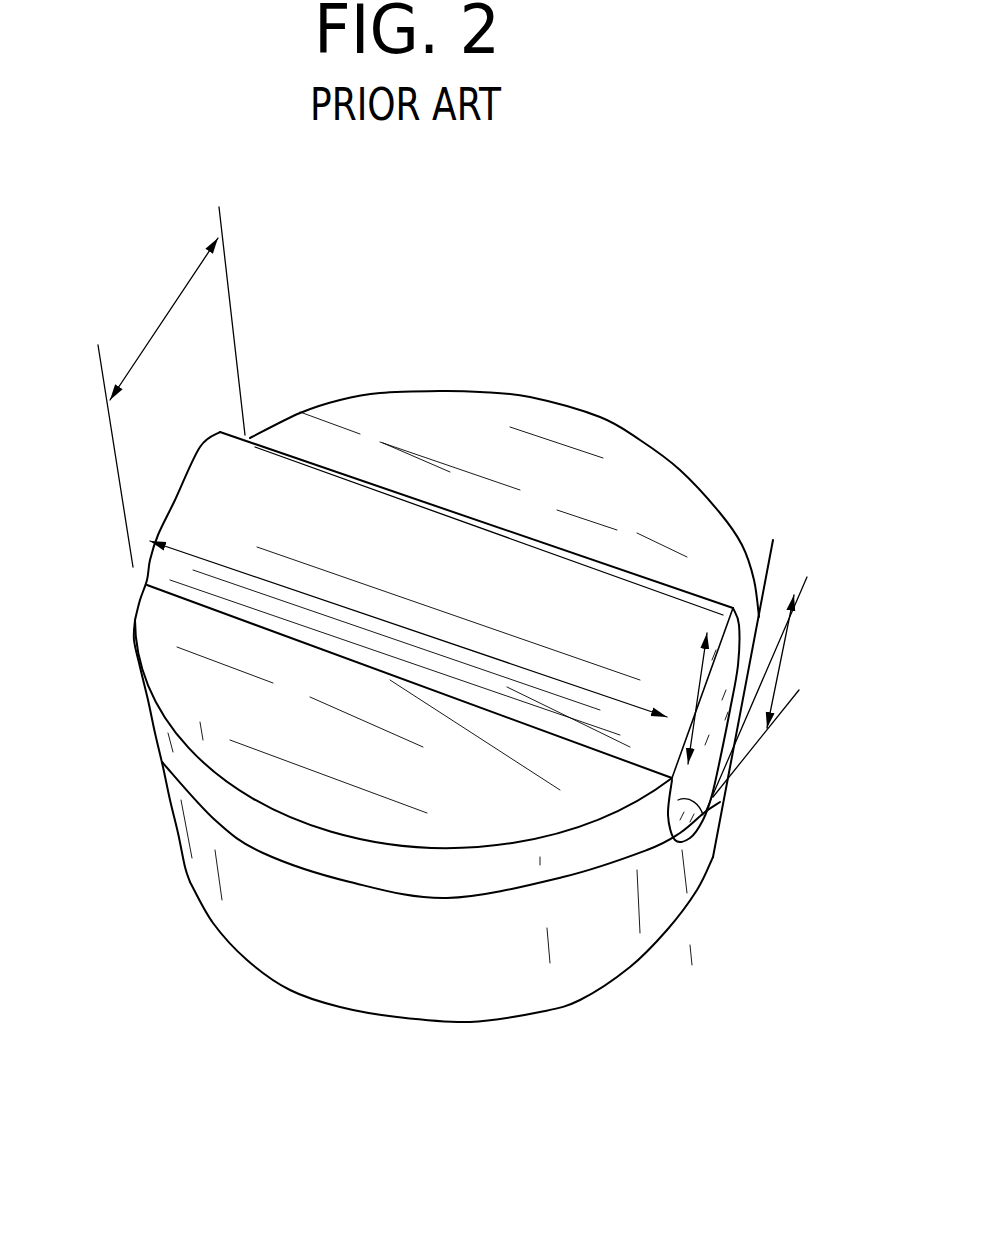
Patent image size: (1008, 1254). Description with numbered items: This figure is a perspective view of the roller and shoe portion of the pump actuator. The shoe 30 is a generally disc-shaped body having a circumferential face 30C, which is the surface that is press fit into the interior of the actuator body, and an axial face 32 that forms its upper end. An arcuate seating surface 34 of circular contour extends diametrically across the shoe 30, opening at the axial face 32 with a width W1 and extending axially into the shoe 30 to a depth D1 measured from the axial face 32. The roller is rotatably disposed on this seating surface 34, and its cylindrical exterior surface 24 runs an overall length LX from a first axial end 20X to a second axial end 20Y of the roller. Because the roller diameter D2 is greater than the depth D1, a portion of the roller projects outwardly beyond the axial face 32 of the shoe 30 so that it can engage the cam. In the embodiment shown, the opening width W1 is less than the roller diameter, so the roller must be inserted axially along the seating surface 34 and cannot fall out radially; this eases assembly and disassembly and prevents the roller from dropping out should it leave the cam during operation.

The shoe 30 is at (597, 415).
The axial face 32 is at (670, 497).
The circumferential face 30C is at (513, 987).
The cylindrical exterior surface 24 is at (490, 560).
The first axial end 20X is at (170, 487).
The second axial end 20Y is at (734, 665).
The seating surface 34 is at (708, 816).
The width W1 is at (170, 300).
The overall length LX is at (198, 556).
The diameter D2 is at (700, 690).
The depth D1 is at (783, 655).